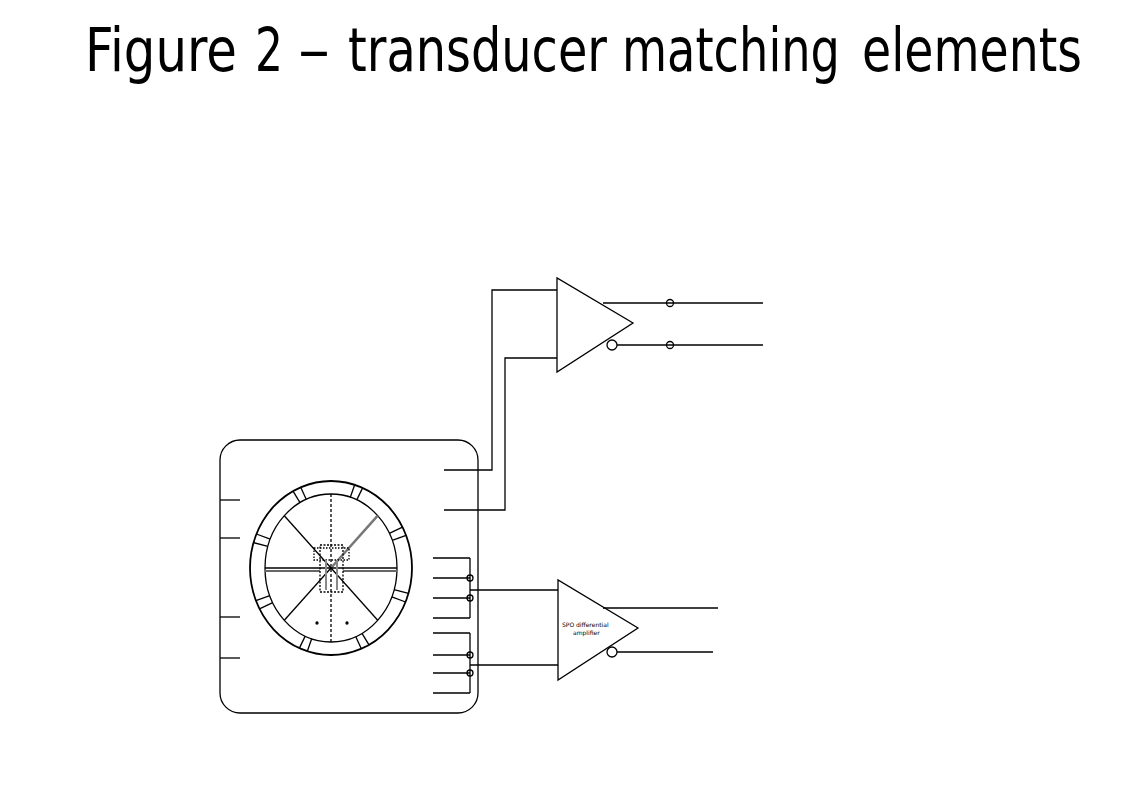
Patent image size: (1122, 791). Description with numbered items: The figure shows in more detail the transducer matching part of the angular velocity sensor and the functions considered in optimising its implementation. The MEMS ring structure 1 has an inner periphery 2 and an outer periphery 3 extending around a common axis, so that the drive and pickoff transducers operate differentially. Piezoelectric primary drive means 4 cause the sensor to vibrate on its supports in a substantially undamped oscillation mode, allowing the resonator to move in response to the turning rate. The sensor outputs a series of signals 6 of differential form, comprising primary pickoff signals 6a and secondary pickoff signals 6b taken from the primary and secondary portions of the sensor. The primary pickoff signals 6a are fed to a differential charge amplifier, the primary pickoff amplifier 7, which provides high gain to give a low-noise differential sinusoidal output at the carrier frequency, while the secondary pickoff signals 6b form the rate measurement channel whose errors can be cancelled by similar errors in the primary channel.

The MEMS ring structure 1 is at (282, 504).
The inner periphery 2 is at (337, 488).
The outer periphery 3 is at (275, 508).
The piezoelectric primary drive means 4 is at (270, 560).
The signals 6 is at (449, 718).
The primary pickoff signals 6a is at (492, 339).
The secondary pickoff signals 6b is at (515, 588).
The primary pickoff amplifier 7 is at (570, 298).